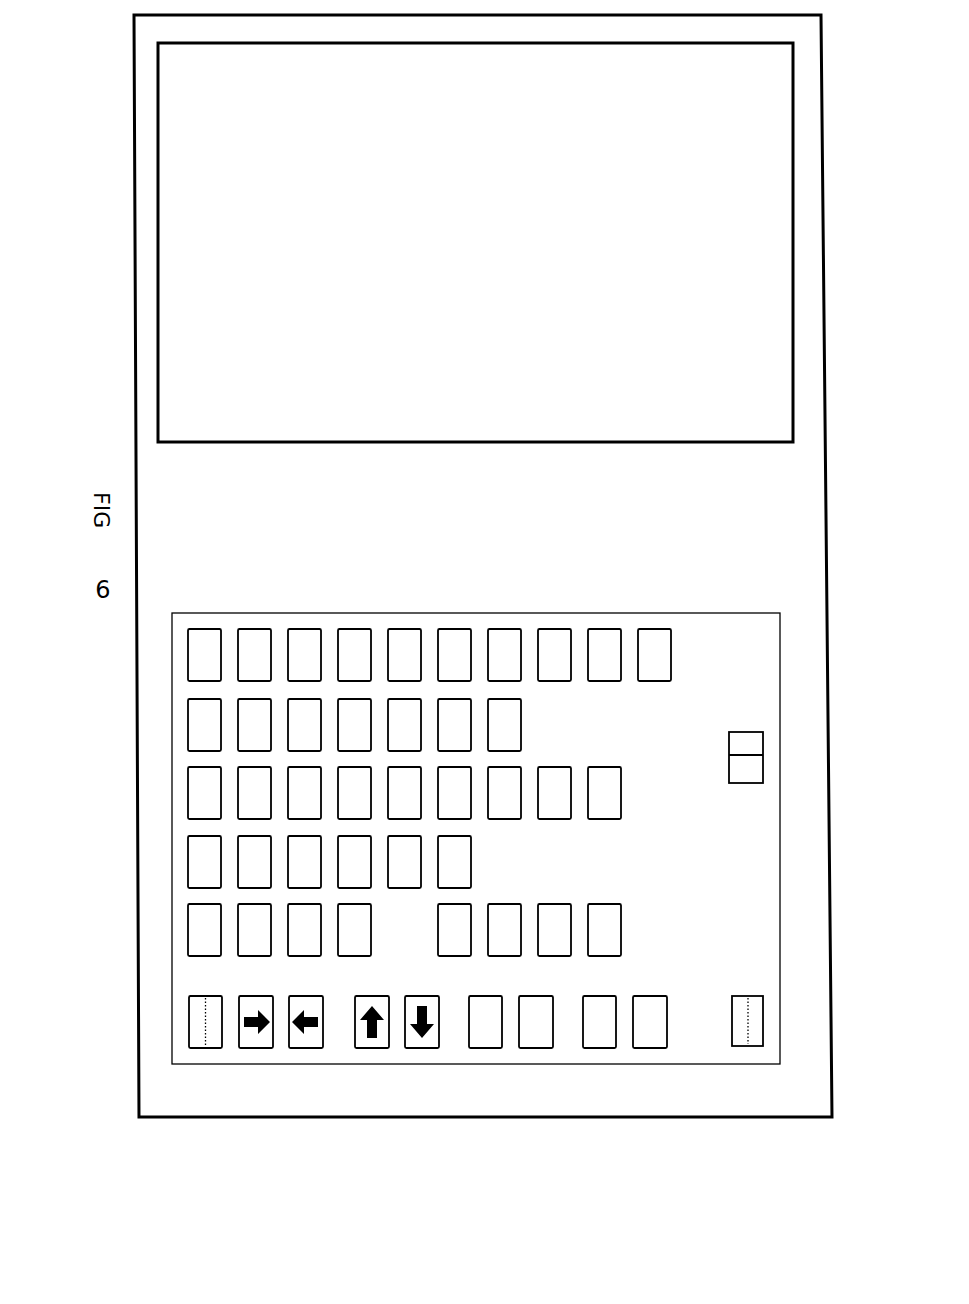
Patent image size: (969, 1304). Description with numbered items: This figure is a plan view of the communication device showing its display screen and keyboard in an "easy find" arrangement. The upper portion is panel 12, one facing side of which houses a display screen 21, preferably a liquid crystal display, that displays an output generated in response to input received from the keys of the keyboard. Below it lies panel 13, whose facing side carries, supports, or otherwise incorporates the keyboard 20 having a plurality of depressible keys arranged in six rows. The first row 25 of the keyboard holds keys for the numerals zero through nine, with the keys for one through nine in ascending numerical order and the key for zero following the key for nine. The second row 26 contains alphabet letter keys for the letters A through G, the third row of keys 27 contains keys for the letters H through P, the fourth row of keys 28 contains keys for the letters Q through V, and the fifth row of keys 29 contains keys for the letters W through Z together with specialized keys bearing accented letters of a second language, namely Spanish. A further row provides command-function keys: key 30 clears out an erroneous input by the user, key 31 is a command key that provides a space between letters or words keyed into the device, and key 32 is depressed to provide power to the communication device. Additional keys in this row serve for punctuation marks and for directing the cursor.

The panel 12 is at (145, 218).
The panel 13 is at (153, 870).
The keyboard 20 is at (723, 883).
The display screen 21 is at (192, 65).
The first row 25 is at (187, 639).
The second row 26 is at (190, 722).
The third row of keys 27 is at (190, 795).
The fourth row of keys 28 is at (190, 856).
The fifth row of keys 29 is at (190, 931).
The key 30 is at (189, 1016).
The key 31 is at (745, 1047).
The key 32 is at (745, 710).